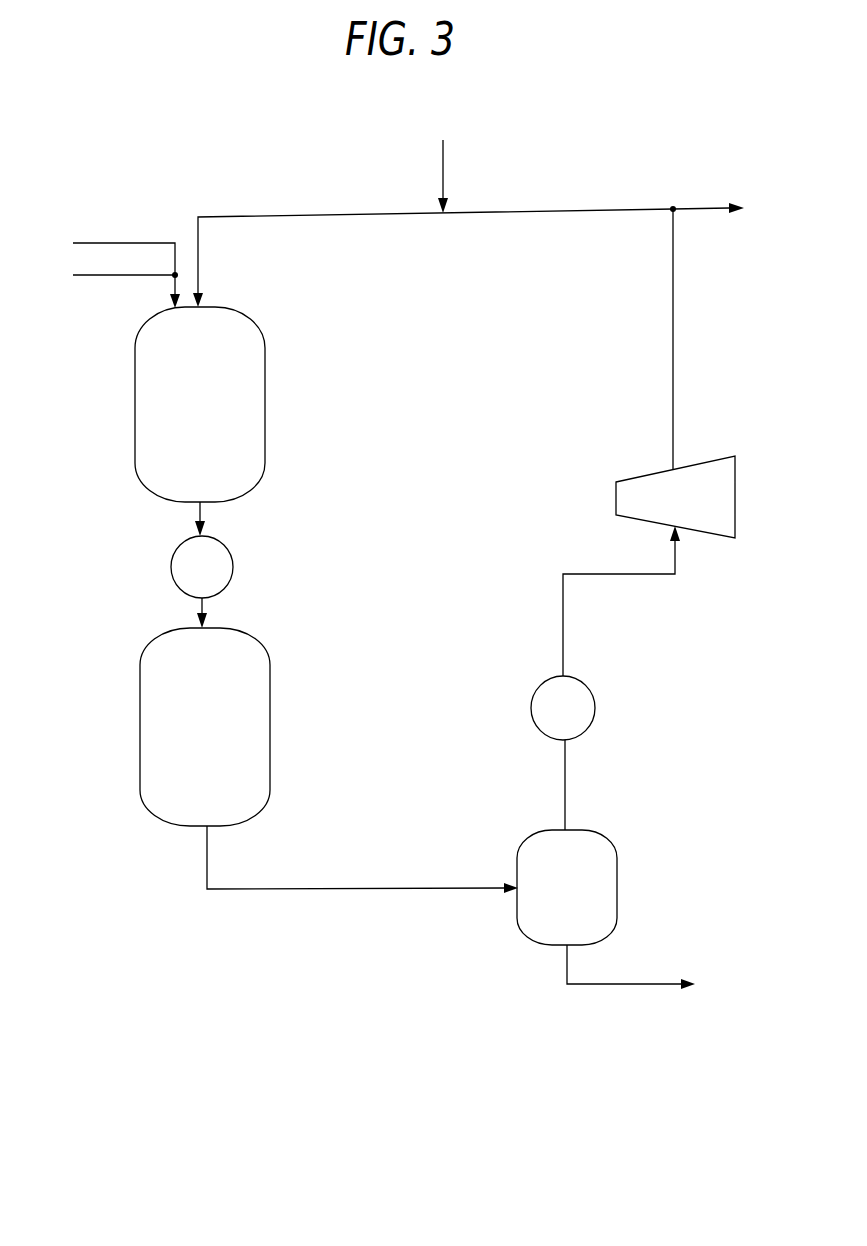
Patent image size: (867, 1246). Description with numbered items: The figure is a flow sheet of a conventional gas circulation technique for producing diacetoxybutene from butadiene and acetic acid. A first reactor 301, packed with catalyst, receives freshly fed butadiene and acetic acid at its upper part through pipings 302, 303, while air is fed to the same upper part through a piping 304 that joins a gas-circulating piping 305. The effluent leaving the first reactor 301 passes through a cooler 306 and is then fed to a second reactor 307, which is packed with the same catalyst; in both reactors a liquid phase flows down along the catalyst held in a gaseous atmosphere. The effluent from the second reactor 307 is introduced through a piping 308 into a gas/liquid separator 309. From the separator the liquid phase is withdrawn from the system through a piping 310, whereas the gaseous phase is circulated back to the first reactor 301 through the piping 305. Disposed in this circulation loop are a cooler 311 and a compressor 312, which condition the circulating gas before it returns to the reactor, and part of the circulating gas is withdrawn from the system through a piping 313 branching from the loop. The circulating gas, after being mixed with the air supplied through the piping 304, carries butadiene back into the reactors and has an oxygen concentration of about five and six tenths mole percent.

The first reactor 301 is at (265, 413).
The piping 302 is at (110, 243).
The piping 303 is at (92, 276).
The piping 304 is at (443, 176).
The gas-circulating piping 305 is at (543, 209).
The cooler 306 is at (233, 567).
The second reactor 307 is at (270, 736).
The piping 308 is at (340, 889).
The gas/liquid separator 309 is at (617, 901).
The piping 310 is at (636, 984).
The cooler 311 is at (595, 702).
The compressor 312 is at (717, 534).
The piping 313 is at (712, 211).